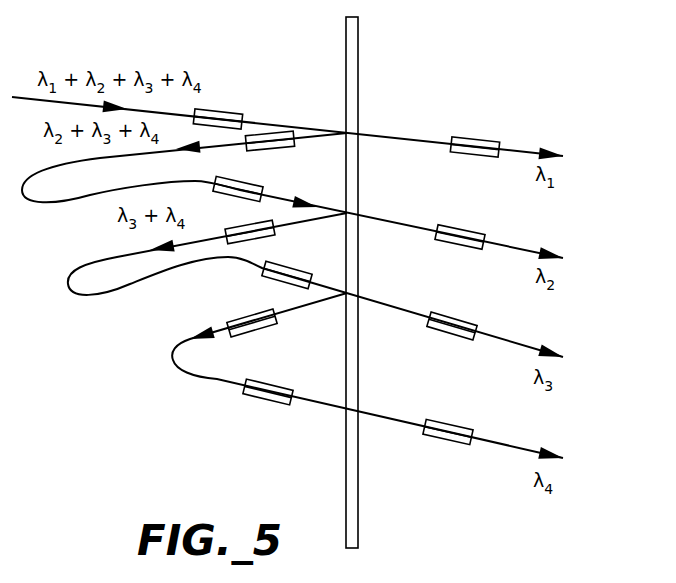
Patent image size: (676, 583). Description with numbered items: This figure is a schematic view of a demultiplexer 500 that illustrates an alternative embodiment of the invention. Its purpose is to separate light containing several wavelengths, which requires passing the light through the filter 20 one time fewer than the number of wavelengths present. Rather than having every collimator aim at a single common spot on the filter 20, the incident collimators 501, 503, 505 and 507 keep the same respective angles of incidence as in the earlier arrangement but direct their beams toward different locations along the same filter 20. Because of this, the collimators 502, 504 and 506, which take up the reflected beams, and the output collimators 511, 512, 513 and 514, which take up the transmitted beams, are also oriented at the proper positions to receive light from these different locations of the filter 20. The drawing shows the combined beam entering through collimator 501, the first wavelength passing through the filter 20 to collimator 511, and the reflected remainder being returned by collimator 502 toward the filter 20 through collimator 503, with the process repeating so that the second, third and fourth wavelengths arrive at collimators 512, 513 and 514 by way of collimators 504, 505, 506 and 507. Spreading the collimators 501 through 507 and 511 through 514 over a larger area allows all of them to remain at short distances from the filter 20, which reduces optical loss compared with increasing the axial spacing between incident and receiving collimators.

The demultiplexer 500 is at (0, 0).
The collimator 501 is at (233, 110).
The collimator 502 is at (268, 133).
The collimator 503 is at (223, 203).
The collimator 504 is at (241, 246).
The collimator 505 is at (263, 283).
The collimator 506 is at (245, 337).
The collimator 507 is at (264, 406).
The collimator 511 is at (466, 138).
The collimator 512 is at (447, 226).
The collimator 513 is at (441, 314).
The collimator 514 is at (440, 421).
The filter 20 is at (358, 493).